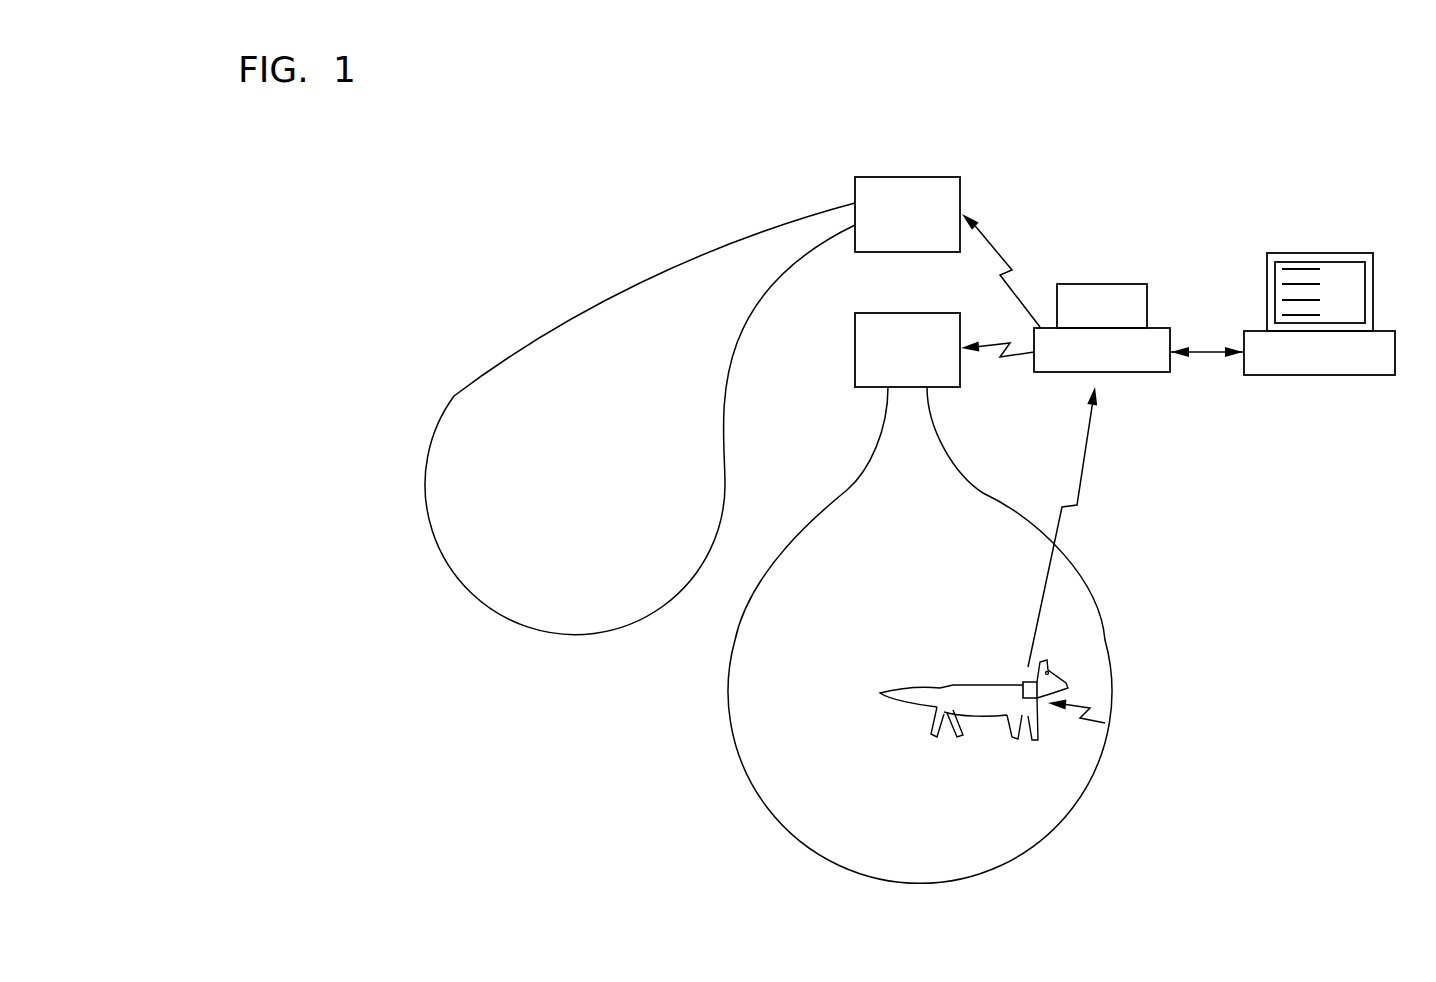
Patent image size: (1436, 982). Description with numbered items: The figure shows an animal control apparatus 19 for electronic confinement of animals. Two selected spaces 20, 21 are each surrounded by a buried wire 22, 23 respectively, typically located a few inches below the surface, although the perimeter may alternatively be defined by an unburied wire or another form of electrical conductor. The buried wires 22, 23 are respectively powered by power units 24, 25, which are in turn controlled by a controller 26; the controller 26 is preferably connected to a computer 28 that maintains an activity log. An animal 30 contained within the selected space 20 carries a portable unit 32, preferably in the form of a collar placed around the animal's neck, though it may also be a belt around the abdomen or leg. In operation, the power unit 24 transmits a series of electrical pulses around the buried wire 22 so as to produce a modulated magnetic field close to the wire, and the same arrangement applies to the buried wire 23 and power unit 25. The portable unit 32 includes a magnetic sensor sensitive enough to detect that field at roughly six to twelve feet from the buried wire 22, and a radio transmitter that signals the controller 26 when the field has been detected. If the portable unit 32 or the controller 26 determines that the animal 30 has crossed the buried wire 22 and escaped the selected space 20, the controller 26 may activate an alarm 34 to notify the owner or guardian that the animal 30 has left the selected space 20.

The animal control apparatus 19 is at (666, 205).
The selected space 20 is at (970, 635).
The selected space 21 is at (640, 419).
The buried wire 22 is at (1112, 640).
The buried wire 23 is at (537, 335).
The power unit 24 is at (943, 387).
The power unit 25 is at (933, 177).
The controller 26 is at (1146, 372).
The computer 28 is at (1342, 375).
The animal 30 is at (974, 719).
The portable unit 32 is at (1025, 682).
The alarm 34 is at (1130, 283).